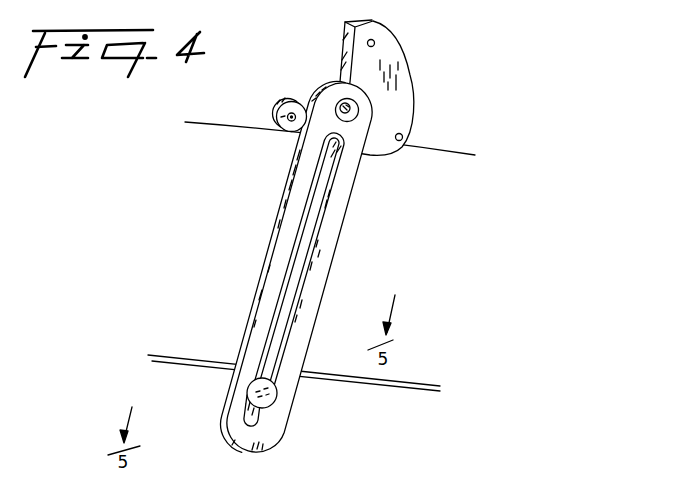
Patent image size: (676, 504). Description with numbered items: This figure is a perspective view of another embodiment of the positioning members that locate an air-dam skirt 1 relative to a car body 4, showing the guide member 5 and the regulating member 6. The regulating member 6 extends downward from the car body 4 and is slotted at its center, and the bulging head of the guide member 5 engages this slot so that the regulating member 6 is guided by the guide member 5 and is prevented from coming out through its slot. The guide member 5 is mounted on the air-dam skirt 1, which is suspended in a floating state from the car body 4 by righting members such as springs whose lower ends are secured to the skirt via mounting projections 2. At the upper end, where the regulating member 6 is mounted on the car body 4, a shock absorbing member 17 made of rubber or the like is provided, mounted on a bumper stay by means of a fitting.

The air-dam skirt 1 is at (185, 408).
The mounting projection 2 is at (278, 397).
The car body 4 is at (485, 115).
The guide member 5 is at (262, 385).
The regulating member 6 is at (292, 207).
The shock absorbing member 17 is at (395, 49).